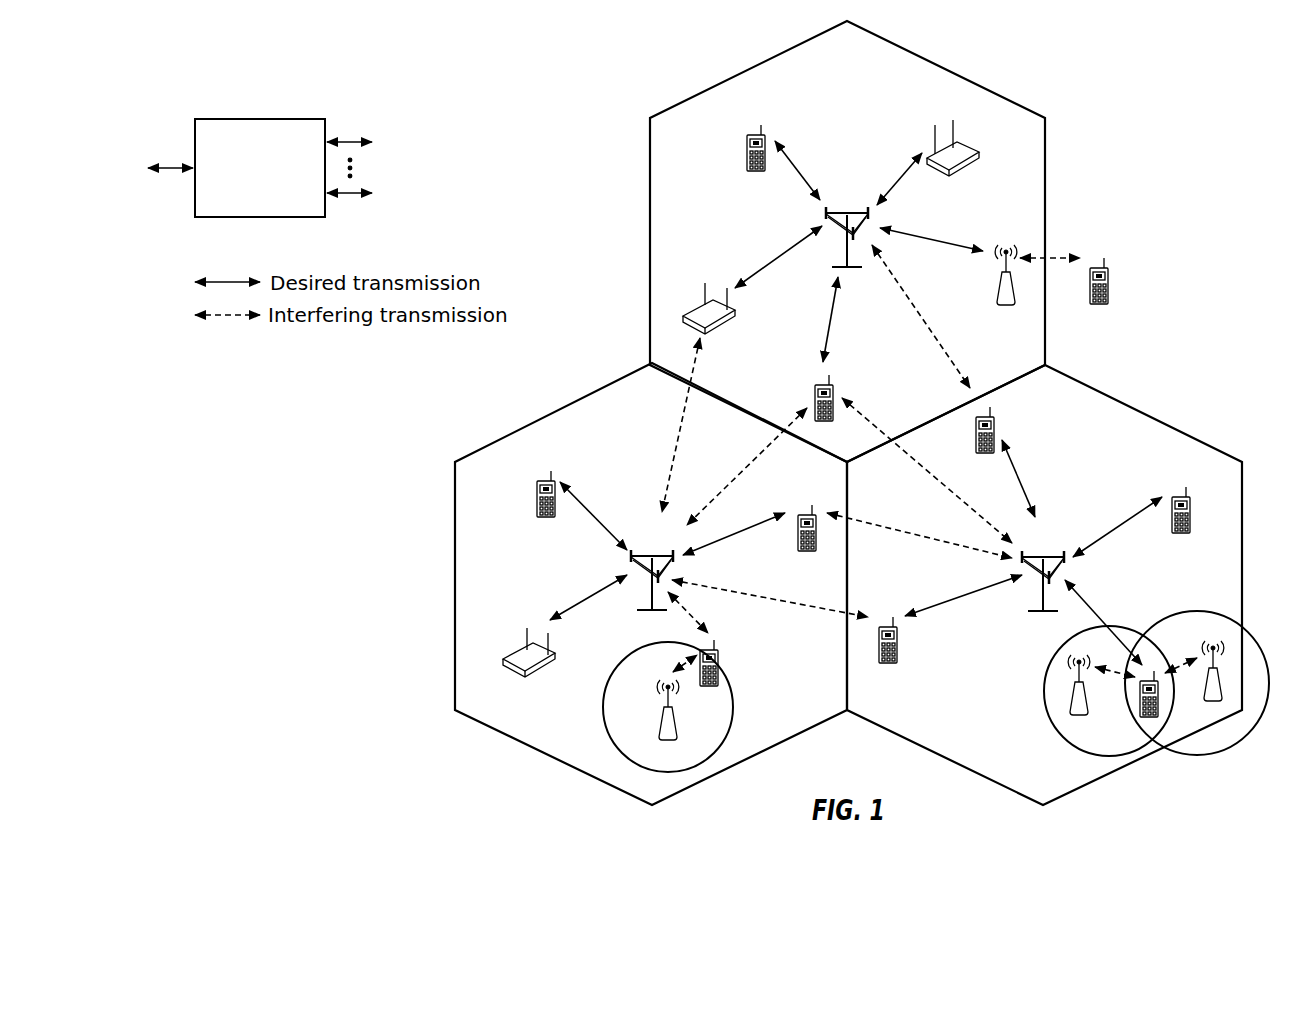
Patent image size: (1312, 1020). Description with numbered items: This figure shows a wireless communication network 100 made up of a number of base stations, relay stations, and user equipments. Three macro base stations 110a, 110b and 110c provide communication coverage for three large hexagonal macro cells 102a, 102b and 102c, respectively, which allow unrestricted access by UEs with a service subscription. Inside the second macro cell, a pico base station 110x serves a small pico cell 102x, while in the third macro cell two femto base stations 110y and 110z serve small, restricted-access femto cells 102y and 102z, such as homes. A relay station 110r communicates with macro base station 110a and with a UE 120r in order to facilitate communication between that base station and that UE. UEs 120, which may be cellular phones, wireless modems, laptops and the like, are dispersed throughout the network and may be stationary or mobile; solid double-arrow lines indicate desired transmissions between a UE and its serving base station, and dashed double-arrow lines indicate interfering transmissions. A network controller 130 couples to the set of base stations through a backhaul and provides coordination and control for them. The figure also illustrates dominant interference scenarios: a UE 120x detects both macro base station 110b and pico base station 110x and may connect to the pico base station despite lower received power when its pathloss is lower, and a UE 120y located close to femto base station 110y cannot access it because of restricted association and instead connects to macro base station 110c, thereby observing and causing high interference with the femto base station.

The wireless communication network 100 is at (1186, 78).
The macro cell 102a is at (947, 70).
The macro cell 102b is at (553, 412).
The macro cell 102c is at (1143, 412).
The pico cell 102x is at (622, 660).
The femto cell 102y is at (1052, 657).
The femto cell 102z is at (1192, 610).
The macro base station 110a is at (843, 211).
The macro base station 110b is at (648, 554).
The macro base station 110c is at (1039, 555).
The relay station 110r is at (997, 295).
The pico base station 110x is at (678, 730).
The femto base station 110y is at (1088, 708).
The femto base station 110z is at (1222, 696).
The user equipment (UE) 120 is at (746, 142).
The UE 120r is at (1108, 295).
The UE 120x is at (717, 660).
The UE 120y is at (1140, 712).
The network controller 130 is at (257, 118).